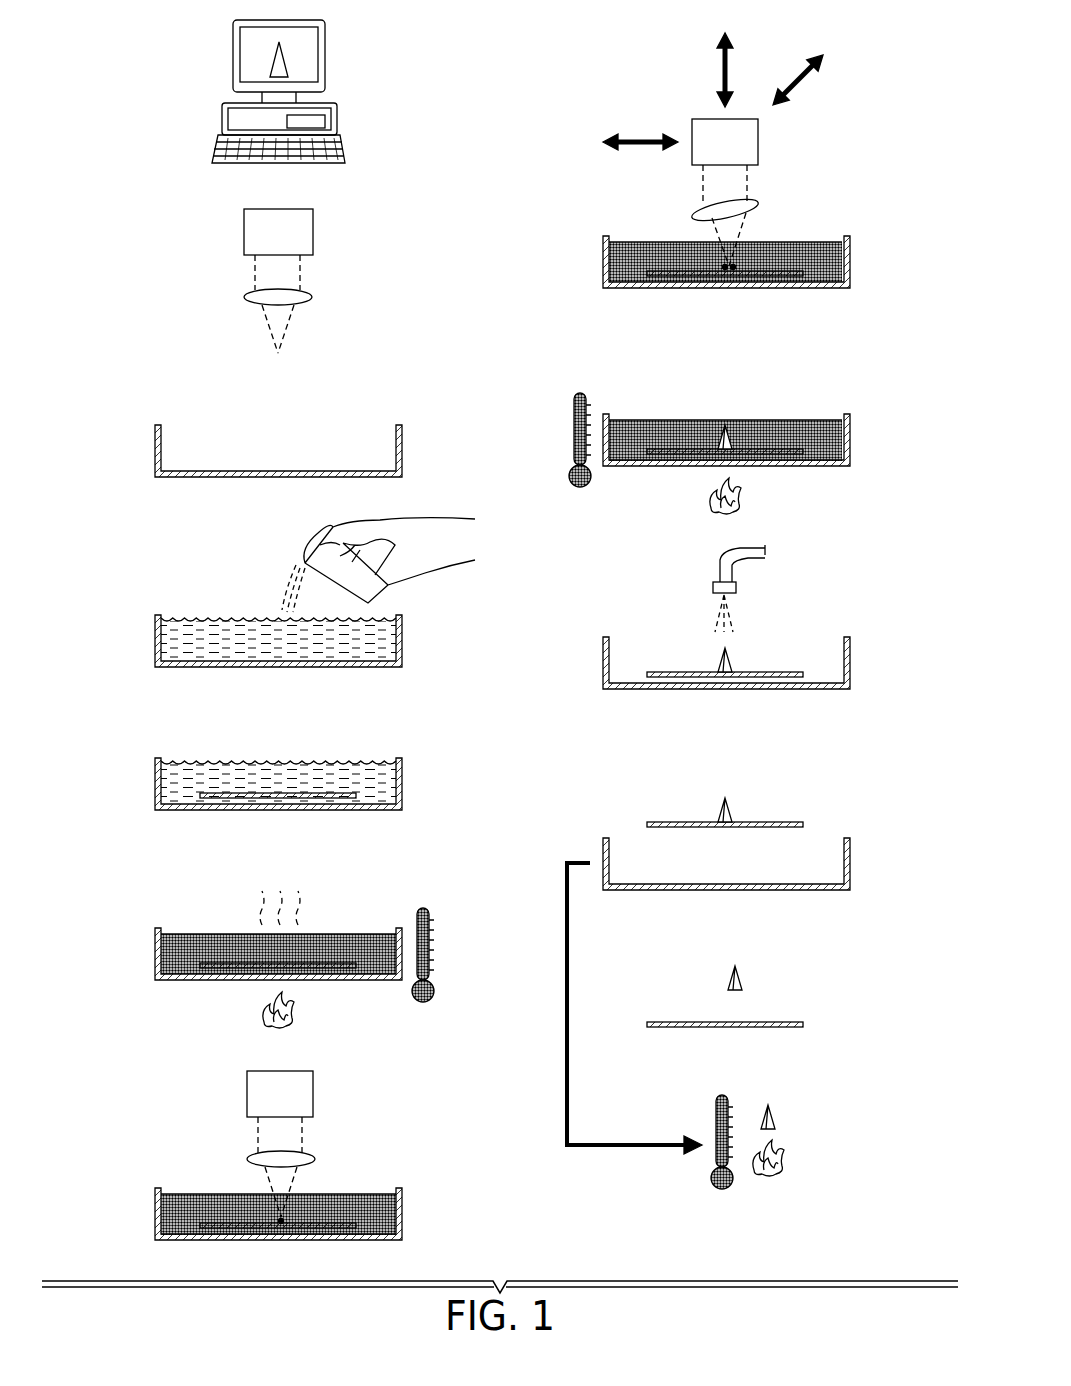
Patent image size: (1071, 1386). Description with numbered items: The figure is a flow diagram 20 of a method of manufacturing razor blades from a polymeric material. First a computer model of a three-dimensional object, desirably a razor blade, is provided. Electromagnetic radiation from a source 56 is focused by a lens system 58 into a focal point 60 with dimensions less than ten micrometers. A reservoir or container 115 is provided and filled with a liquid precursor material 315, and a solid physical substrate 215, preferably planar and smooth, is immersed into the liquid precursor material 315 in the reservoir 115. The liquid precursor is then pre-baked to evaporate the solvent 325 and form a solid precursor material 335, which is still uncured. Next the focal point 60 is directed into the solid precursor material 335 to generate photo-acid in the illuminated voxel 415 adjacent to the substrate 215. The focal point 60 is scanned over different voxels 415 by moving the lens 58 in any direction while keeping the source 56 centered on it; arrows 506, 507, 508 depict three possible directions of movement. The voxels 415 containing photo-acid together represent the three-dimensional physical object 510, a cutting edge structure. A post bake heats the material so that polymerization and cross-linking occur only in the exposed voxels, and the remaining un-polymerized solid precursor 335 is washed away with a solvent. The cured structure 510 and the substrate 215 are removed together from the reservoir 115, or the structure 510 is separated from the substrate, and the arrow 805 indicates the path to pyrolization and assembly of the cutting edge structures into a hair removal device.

The flow diagram 20 is at (101, 54).
The source 56 is at (316, 234).
The lens system 58 is at (316, 296).
The focal point 60 is at (297, 359).
The reservoir or container 115 is at (405, 442).
The substrate 215 is at (240, 792).
The liquid precursor material 315 is at (222, 625).
The solvent 325 is at (285, 886).
The solid precursor material 335 is at (352, 938).
The voxel 415 is at (285, 1221).
The arrow 506 is at (721, 70).
The arrow 507 is at (800, 82).
The arrow 508 is at (640, 139).
The three-dimensional physical object 510 is at (712, 428).
The arrow 805 is at (565, 1001).